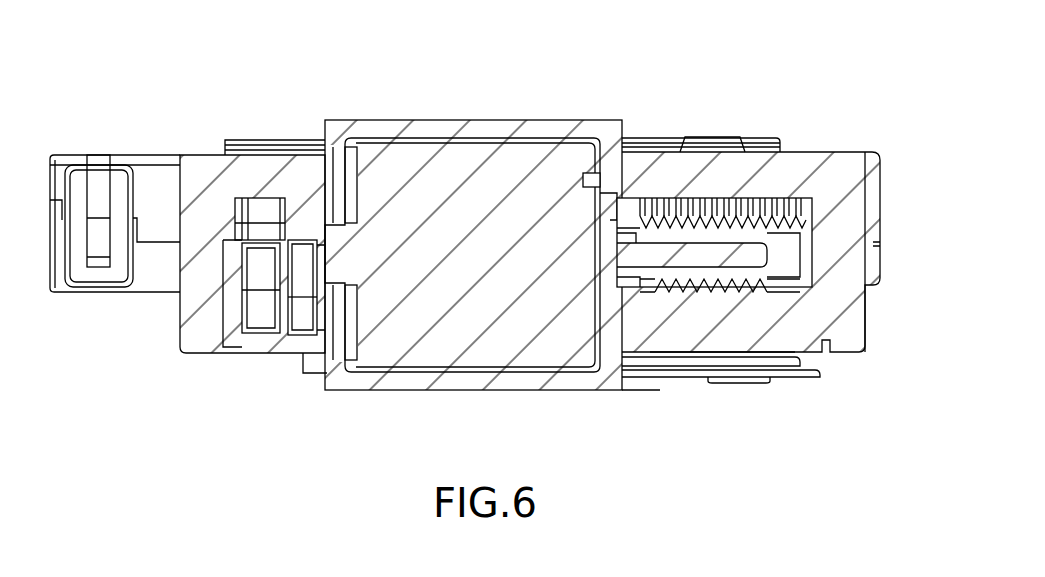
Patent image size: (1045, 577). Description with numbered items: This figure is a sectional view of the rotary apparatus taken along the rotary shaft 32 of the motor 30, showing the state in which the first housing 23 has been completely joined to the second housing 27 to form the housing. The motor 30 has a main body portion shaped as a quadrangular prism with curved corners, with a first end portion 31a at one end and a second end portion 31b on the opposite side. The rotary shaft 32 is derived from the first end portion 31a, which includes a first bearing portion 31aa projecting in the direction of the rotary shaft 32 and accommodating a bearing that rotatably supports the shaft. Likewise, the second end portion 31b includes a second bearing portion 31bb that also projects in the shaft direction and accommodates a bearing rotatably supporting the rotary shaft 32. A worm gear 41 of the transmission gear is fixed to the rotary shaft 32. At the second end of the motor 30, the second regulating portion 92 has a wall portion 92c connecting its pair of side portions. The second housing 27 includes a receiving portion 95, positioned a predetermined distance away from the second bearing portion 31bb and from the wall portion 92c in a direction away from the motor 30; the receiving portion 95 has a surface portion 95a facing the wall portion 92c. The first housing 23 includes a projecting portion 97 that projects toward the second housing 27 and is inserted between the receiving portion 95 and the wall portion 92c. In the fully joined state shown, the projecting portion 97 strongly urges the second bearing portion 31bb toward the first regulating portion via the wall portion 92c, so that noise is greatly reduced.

The first housing 23 is at (611, 104).
The second housing 27 is at (610, 405).
The motor 30 is at (503, 124).
The first end portion 31a is at (600, 193).
The first bearing portion 31aa is at (600, 292).
The second end portion 31b is at (339, 157).
The second bearing portion 31bb is at (352, 250).
The rotary shaft 32 is at (744, 253).
The worm gear 41 is at (762, 287).
The second regulating portion 92 is at (253, 306).
The wall portion 92c is at (318, 267).
The receiving portion 95 is at (115, 299).
The surface portion 95a is at (283, 280).
The projecting portion 97 is at (303, 253).